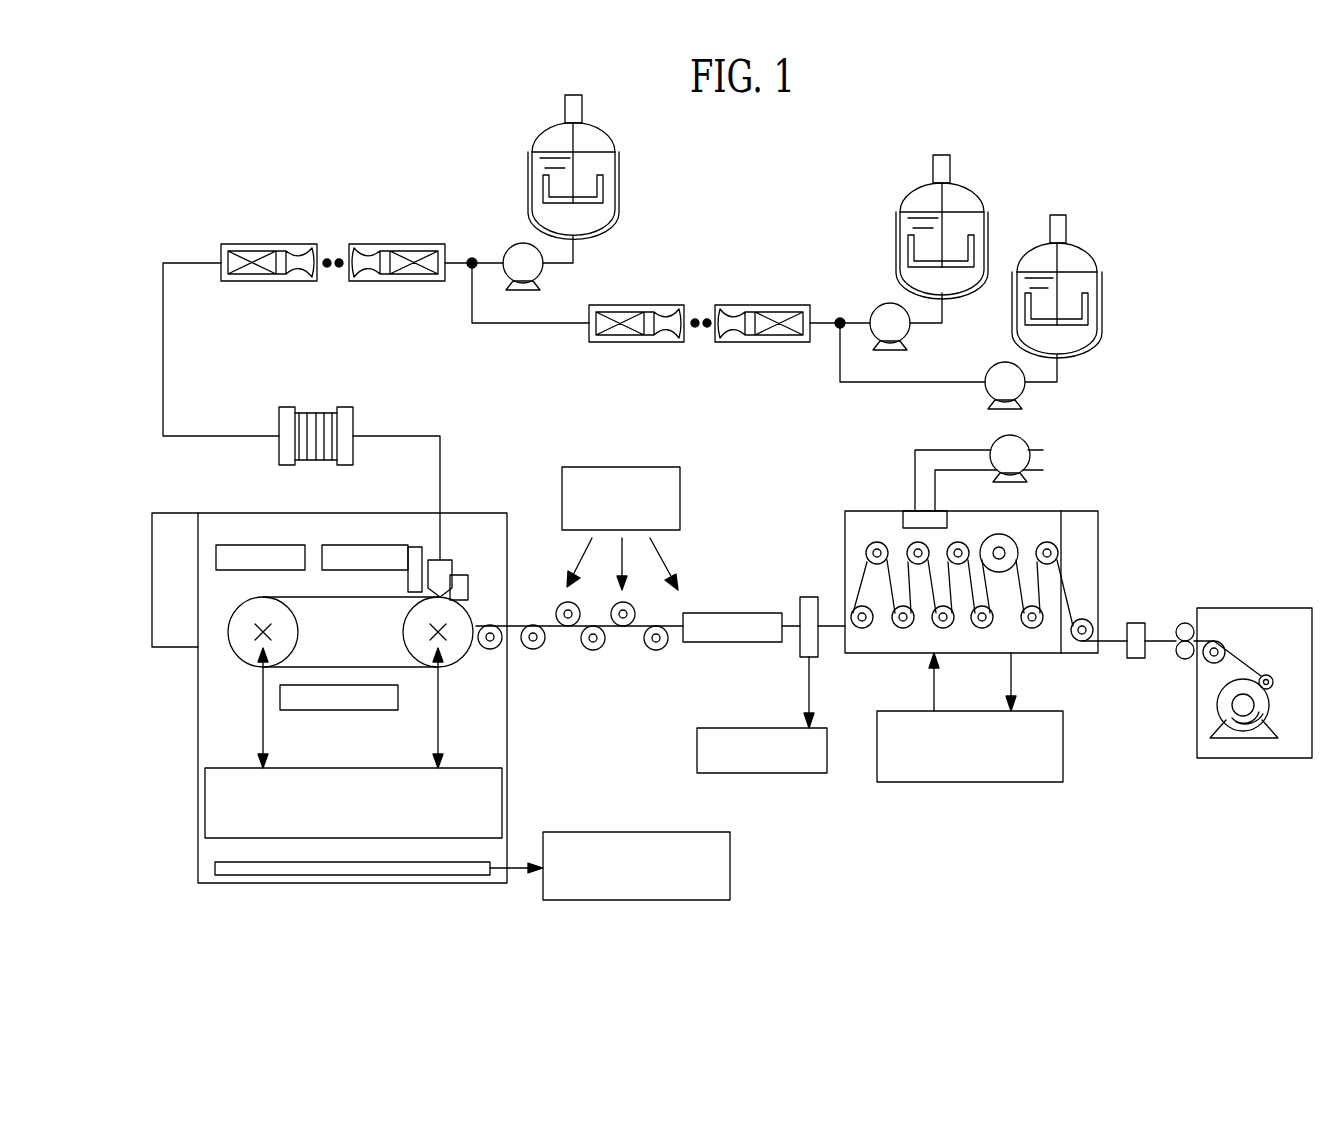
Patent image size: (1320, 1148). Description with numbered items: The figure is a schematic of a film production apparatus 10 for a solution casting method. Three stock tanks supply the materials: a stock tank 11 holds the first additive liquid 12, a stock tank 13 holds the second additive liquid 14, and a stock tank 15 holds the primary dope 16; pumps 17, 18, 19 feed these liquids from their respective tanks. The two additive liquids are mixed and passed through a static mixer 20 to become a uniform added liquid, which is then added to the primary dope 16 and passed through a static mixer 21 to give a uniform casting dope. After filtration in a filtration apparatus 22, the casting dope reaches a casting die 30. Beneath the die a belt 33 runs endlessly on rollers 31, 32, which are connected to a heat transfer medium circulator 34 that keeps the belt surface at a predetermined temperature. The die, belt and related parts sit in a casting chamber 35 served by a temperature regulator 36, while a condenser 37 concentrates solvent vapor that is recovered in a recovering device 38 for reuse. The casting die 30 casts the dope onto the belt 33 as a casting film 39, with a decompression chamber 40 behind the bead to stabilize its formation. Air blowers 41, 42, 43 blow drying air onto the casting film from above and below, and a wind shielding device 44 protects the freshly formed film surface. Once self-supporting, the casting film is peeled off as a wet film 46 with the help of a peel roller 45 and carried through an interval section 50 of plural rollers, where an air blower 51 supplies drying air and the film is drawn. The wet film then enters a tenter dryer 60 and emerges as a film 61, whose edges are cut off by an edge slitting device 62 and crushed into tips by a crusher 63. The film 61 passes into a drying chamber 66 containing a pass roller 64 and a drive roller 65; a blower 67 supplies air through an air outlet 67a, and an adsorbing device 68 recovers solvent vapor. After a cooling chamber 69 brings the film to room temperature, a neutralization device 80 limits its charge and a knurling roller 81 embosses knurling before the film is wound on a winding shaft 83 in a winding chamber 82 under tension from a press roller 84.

The film production apparatus 10 is at (1212, 290).
The stock tank 11 is at (1097, 268).
The first additive liquid 12 is at (1078, 335).
The stock tank 13 is at (900, 212).
The second additive liquid 14 is at (922, 276).
The stock tank 15 is at (616, 148).
The primary dope 16 is at (597, 212).
The pump 17 is at (1018, 388).
The pump 18 is at (902, 329).
The pump 19 is at (512, 257).
The static mixer 20 is at (658, 343).
The static mixer 21 is at (385, 246).
The filtration apparatus 22 is at (348, 422).
The casting die 30 is at (444, 572).
The roller 31 is at (453, 652).
The roller 32 is at (243, 652).
The belt 33 is at (474, 620).
The heat transfer medium circulator 34 is at (222, 767).
The casting chamber 35 is at (195, 843).
The temperature regulator 36 is at (173, 650).
The condenser 37 is at (340, 868).
The recovering device 38 is at (600, 831).
The casting film 39 is at (357, 594).
The decompression chamber 40 is at (478, 624).
The air blower 41 is at (343, 550).
The air blower 42 is at (283, 550).
The air blower 43 is at (340, 704).
The wind shielding device 44 is at (414, 553).
The peel roller 45 is at (490, 650).
The wet film 46 is at (523, 646).
The interval section 50 is at (707, 657).
The air blower 51 is at (682, 498).
The tenter dryer 60 is at (738, 613).
The film 61 is at (788, 623).
The edge slitting device 62 is at (812, 597).
The crusher 63 is at (772, 727).
The pass roller 64 is at (912, 624).
The drive roller 65 is at (990, 536).
The drying chamber 66 is at (863, 655).
The blower 67 is at (1030, 462).
The air outlet 67a is at (910, 520).
The adsorbing device 68 is at (925, 782).
The cooling chamber 69 is at (1078, 655).
The neutralization device 80 is at (1135, 623).
The knurling roller 81 is at (1188, 622).
The winding chamber 82 is at (1255, 608).
The winding shaft 83 is at (1218, 698).
The press roller 84 is at (1268, 676).